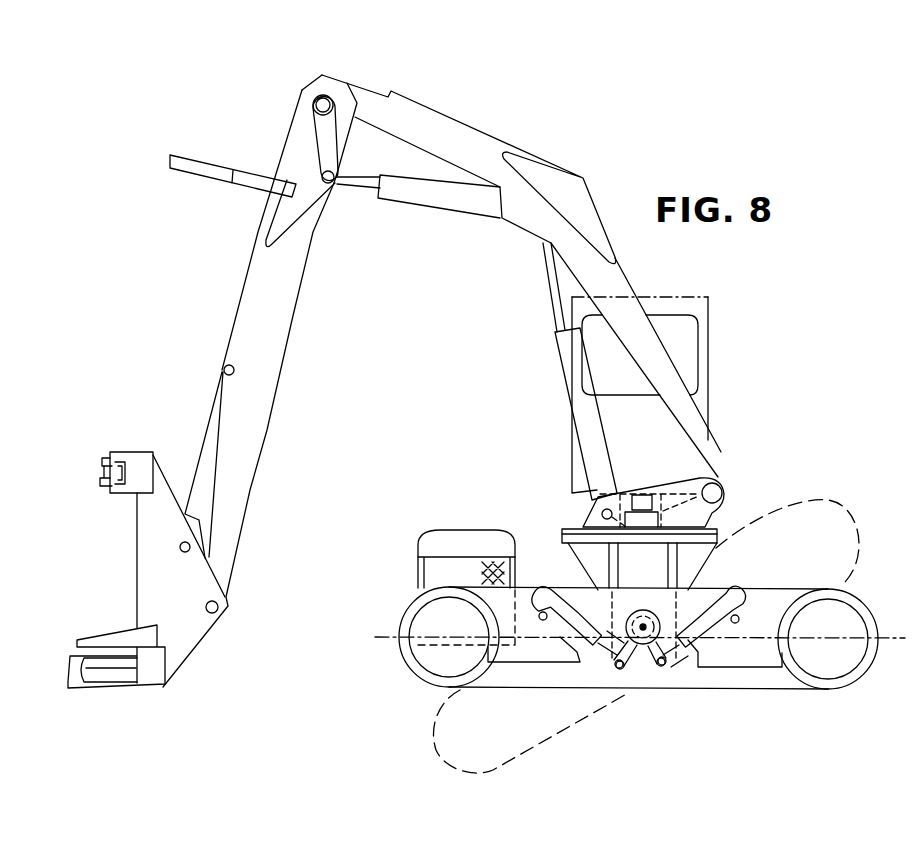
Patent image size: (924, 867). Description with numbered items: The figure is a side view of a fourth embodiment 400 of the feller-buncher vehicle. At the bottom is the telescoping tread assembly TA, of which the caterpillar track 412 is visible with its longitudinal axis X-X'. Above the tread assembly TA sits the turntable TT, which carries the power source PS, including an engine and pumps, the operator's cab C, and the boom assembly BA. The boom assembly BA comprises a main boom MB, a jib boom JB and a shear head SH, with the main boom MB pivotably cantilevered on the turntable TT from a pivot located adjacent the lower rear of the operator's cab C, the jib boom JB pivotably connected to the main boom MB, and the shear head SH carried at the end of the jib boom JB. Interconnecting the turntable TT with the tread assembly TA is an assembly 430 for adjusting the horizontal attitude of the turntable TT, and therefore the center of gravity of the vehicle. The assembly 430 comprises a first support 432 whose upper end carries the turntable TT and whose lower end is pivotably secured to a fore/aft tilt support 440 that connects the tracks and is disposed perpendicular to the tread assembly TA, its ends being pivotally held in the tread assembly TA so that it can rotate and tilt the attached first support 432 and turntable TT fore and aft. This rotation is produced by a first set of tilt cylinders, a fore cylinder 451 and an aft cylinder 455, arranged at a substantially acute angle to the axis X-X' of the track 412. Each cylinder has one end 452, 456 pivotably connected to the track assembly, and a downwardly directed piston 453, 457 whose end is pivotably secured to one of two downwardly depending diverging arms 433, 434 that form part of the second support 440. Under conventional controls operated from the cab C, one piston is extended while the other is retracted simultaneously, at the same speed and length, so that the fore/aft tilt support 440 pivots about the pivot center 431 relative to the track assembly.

The fourth embodiment of the vehicle 400 is at (654, 145).
The caterpillar track 412 is at (806, 685).
The assembly for adjusting the horizontal attitude of the turntable 430 is at (730, 556).
The pivot center 431 is at (648, 628).
The first support 432 is at (597, 560).
The downwardly depending diverging arm 433 is at (634, 664).
The downwardly depending diverging arm 434 is at (668, 664).
The fore/aft tilt support 440 is at (642, 622).
The fore tilt cylinder 451 is at (568, 633).
The cylinder end 452 is at (539, 617).
The piston 453 is at (608, 653).
The aft tilt cylinder 455 is at (714, 631).
The cylinder end 456 is at (738, 619).
The piston 457 is at (674, 662).
The boom assembly BA is at (280, 104).
The main boom MB is at (588, 176).
The operator's cab C is at (652, 292).
The jib boom JB is at (274, 430).
The power source PS is at (474, 527).
The turntable TT is at (566, 534).
The shear head SH is at (199, 652).
The telescoping tread assembly TA is at (636, 697).